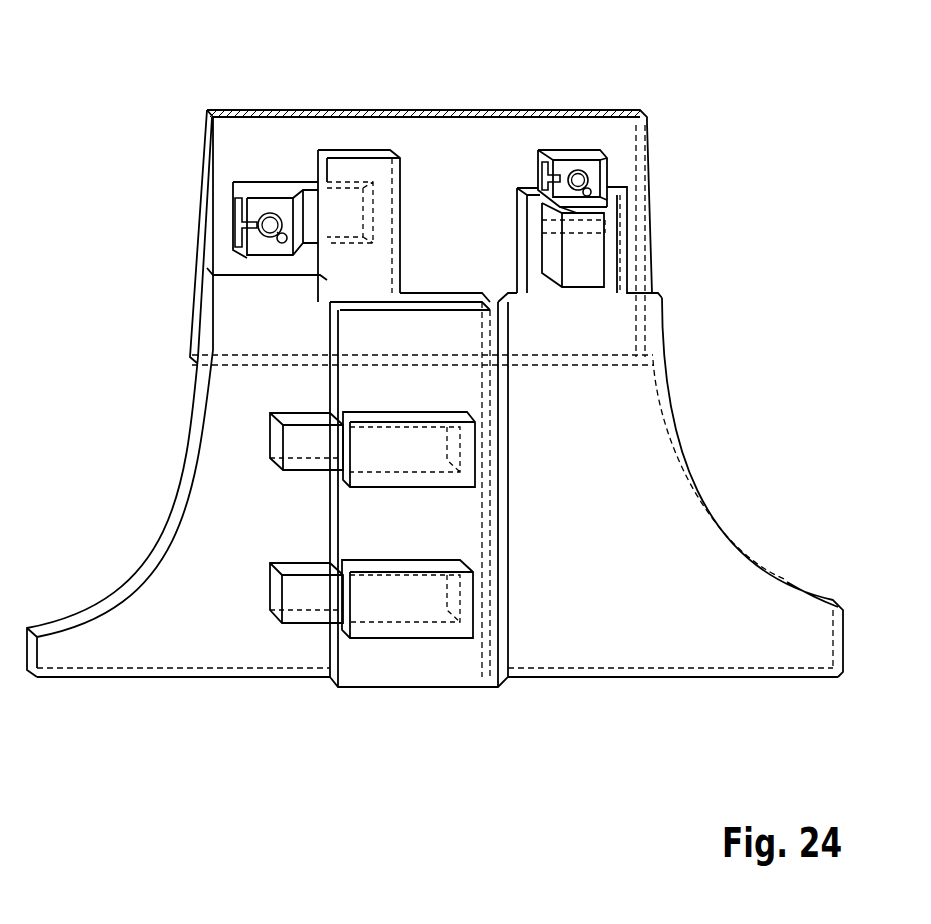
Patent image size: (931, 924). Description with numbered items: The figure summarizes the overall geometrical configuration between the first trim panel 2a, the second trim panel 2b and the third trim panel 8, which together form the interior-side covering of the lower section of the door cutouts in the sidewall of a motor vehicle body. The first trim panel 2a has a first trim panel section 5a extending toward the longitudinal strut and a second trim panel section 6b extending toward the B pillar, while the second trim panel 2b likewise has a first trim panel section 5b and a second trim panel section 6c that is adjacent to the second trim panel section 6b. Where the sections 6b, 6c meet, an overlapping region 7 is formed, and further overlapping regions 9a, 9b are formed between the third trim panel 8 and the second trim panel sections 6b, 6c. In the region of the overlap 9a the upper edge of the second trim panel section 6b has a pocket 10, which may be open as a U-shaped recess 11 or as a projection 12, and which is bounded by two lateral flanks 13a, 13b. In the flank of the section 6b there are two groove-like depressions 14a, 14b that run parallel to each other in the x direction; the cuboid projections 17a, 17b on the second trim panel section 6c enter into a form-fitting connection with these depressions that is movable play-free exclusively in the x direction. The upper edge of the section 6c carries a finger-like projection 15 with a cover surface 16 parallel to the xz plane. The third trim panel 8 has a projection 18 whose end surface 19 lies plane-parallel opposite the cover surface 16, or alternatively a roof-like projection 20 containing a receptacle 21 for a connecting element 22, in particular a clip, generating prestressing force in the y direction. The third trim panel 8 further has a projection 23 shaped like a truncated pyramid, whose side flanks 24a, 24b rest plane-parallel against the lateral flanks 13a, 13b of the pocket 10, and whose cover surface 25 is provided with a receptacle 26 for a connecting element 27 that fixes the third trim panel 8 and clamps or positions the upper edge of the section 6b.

The first trim panel 2a is at (644, 714).
The second trim panel 2b is at (228, 712).
The first trim panel section 5a is at (763, 640).
The first trim panel section 5b is at (162, 640).
The second trim panel section 6b is at (653, 433).
The second trim panel section 6c is at (212, 413).
The overlapping region 7 is at (443, 303).
The third trim panel 8 is at (228, 152).
The overlapping region 9a is at (655, 330).
The overlapping region 9b is at (197, 320).
The pocket 10 is at (671, 245).
The U-shaped recess 11 is at (671, 245).
The projection 12 is at (583, 245).
The lateral flank 13a is at (557, 263).
The lateral flank 13b is at (608, 265).
The groove-like depression 14a is at (468, 453).
The groove-like depression 14b is at (417, 628).
The finger-like projection 15 is at (377, 176).
The cover surface 16 is at (380, 170).
The projection 17a is at (277, 445).
The projection 17b is at (310, 598).
The projection 18 is at (290, 165).
The end surface 19 is at (310, 197).
The projection 20 is at (257, 187).
The receptacle 21 is at (235, 227).
The connecting element 22 is at (267, 215).
The projection 23 is at (590, 152).
The side flank 24a is at (535, 160).
The side flank 24b is at (602, 170).
The cover surface 25 is at (583, 205).
The receptacle 26 is at (550, 190).
The connecting element 27 is at (573, 177).